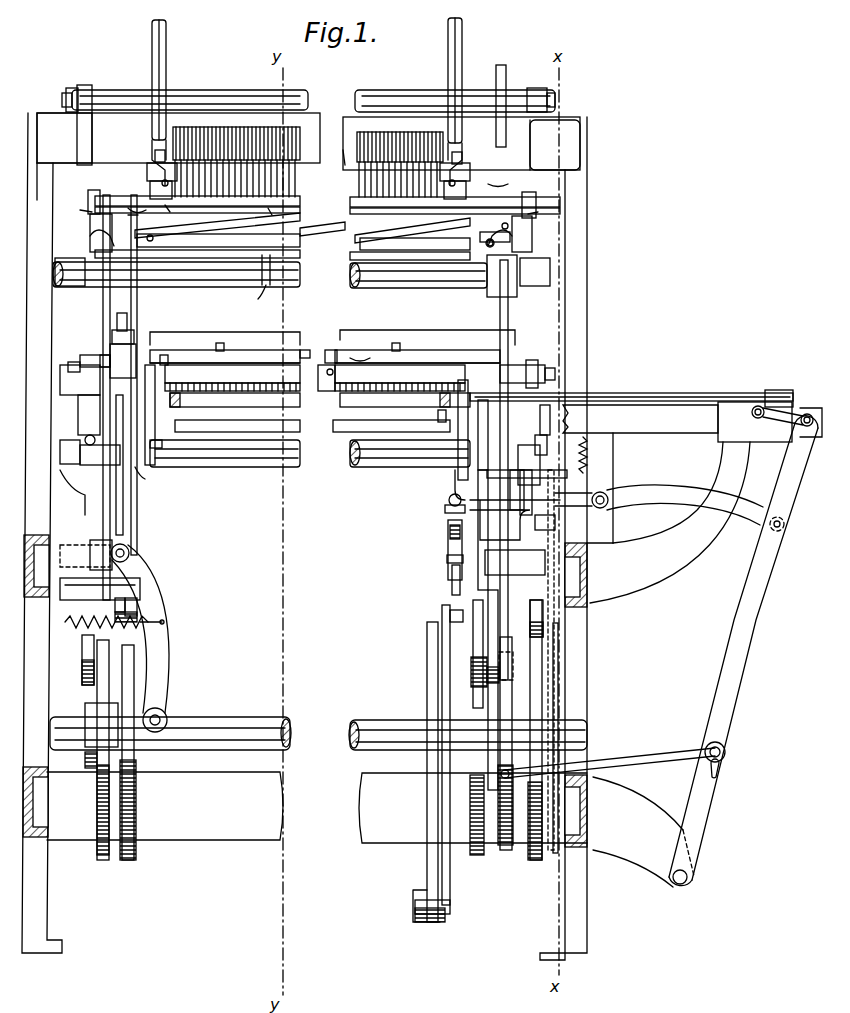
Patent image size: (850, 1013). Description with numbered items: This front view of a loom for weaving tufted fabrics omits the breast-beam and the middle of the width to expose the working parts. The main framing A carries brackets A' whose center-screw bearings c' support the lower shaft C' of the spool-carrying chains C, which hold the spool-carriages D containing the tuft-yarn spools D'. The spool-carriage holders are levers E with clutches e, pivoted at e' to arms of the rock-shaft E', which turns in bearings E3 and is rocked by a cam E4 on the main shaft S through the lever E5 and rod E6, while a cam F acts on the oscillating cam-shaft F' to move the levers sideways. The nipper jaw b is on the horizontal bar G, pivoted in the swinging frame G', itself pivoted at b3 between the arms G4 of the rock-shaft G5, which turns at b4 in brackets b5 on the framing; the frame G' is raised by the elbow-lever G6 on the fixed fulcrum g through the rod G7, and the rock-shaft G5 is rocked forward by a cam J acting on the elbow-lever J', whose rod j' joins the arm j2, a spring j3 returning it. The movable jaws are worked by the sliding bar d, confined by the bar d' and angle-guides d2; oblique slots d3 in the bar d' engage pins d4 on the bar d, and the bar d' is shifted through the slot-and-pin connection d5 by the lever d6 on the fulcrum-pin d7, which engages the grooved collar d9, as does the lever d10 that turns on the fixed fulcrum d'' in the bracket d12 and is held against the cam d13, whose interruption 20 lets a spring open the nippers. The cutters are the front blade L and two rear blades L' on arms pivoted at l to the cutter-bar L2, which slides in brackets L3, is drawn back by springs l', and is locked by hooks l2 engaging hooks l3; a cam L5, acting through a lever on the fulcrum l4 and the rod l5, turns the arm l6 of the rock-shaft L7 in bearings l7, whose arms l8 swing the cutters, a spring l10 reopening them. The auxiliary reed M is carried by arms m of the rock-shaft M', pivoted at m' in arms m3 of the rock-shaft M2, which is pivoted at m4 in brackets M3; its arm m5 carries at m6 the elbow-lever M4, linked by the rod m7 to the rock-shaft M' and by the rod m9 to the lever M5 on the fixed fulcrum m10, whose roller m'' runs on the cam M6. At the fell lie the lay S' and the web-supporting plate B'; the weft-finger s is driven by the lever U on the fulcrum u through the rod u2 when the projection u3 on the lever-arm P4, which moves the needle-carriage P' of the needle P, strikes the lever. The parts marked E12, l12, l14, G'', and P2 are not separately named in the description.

The frame A is at (386, 536).
The frame bracket A' is at (308, 118).
The rod C is at (313, 101).
The shaft C' is at (313, 99).
The coupling c' is at (308, 106).
The bar D is at (331, 161).
The comb D' is at (308, 158).
The arm E is at (306, 180).
The bar E' is at (327, 201).
The pin e is at (308, 181).
The stud e' is at (305, 151).
The bracket E3 is at (305, 201).
The rod E4 is at (296, 533).
The rod E5 is at (100, 397).
The rod E6 is at (132, 512).
The lever E12 is at (339, 203).
The pin l is at (314, 213).
The lever l' is at (305, 241).
The pin l2 is at (495, 248).
The pin l3 is at (503, 231).
The pin l4 is at (299, 221).
The rod l5 is at (506, 470).
The bearing l6 is at (498, 281).
The bearing l7 is at (302, 281).
The finger l8 is at (264, 281).
The link l10 is at (505, 184).
The pin l12 is at (320, 231).
The pin l14 is at (308, 209).
The bar L is at (282, 251).
The bar L' is at (329, 227).
The bar L2 is at (303, 245).
The bracket L3 is at (304, 233).
The bar L5 is at (504, 743).
The roller L7 is at (270, 274).
The bar G is at (325, 353).
The cover G' is at (332, 330).
The bearing G'' is at (303, 383).
The gear G4 is at (313, 415).
The gear G5 is at (310, 489).
The gear G6 is at (496, 690).
The rod G7 is at (488, 530).
The bar d is at (325, 353).
The bar d' is at (325, 349).
The stud d2 is at (307, 343).
The stud d3 is at (308, 352).
The spring d4 is at (360, 348).
The lever d5 is at (132, 336).
The block d6 is at (114, 353).
The pin d7 is at (118, 321).
The stud d9 is at (78, 364).
The arm d10 is at (150, 525).
The pivot d'' is at (138, 552).
The block d12 is at (92, 556).
The gear d13 is at (138, 790).
The pin 20 is at (152, 634).
The pin b is at (324, 377).
The bearing b3 is at (304, 363).
The pin b4 is at (306, 428).
The block b5 is at (302, 448).
The bracket M is at (326, 383).
The roller M' is at (315, 376).
The roller M2 is at (310, 453).
The bar M3 is at (510, 489).
The bar M4 is at (448, 540).
The bar M5 is at (453, 755).
The bar M6 is at (422, 772).
The pin m is at (290, 392).
The pin m' is at (310, 348).
The bar m3 is at (312, 422).
The bar m4 is at (325, 443).
The pin m5 is at (455, 572).
The pin m6 is at (441, 555).
The pin m7 is at (444, 498).
The pin m9 is at (459, 607).
The foot m10 is at (450, 906).
The pin m'' is at (441, 511).
The bar B' is at (320, 400).
The table S is at (317, 780).
The bar S' is at (312, 422).
The pin s is at (435, 415).
The bar F is at (89, 665).
The bar F' is at (78, 660).
The bar J is at (541, 730).
The bar J' is at (539, 660).
The pin j' is at (557, 522).
The bar j2 is at (531, 492).
The plate j3 is at (84, 557).
The bracket g is at (515, 540).
The rod P is at (631, 388).
The block P' is at (770, 422).
The bar P2 is at (640, 419).
The lever P4 is at (659, 650).
The link U is at (685, 501).
The pivot u is at (581, 492).
The link u2 is at (444, 485).
The pin u3 is at (782, 526).